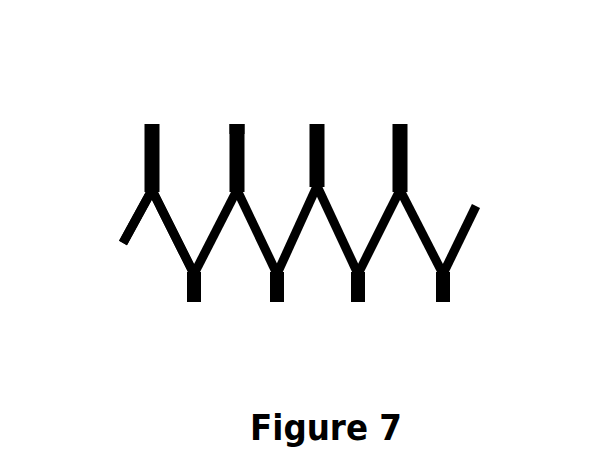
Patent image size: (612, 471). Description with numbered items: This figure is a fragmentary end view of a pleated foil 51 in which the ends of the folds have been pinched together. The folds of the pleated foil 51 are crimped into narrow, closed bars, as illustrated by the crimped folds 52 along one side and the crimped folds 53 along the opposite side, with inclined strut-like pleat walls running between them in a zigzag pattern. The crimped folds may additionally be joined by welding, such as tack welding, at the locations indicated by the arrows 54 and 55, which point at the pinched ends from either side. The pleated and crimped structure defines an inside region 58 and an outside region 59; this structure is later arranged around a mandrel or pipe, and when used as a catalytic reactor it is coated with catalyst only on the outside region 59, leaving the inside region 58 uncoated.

The pleated foil 51 is at (128, 228).
The crimped fold 52 is at (144, 127).
The crimped fold 53 is at (202, 292).
The tack weld 54 is at (305, 187).
The tack weld 55 is at (346, 279).
The inside region 58 is at (160, 287).
The outside region 59 is at (222, 107).